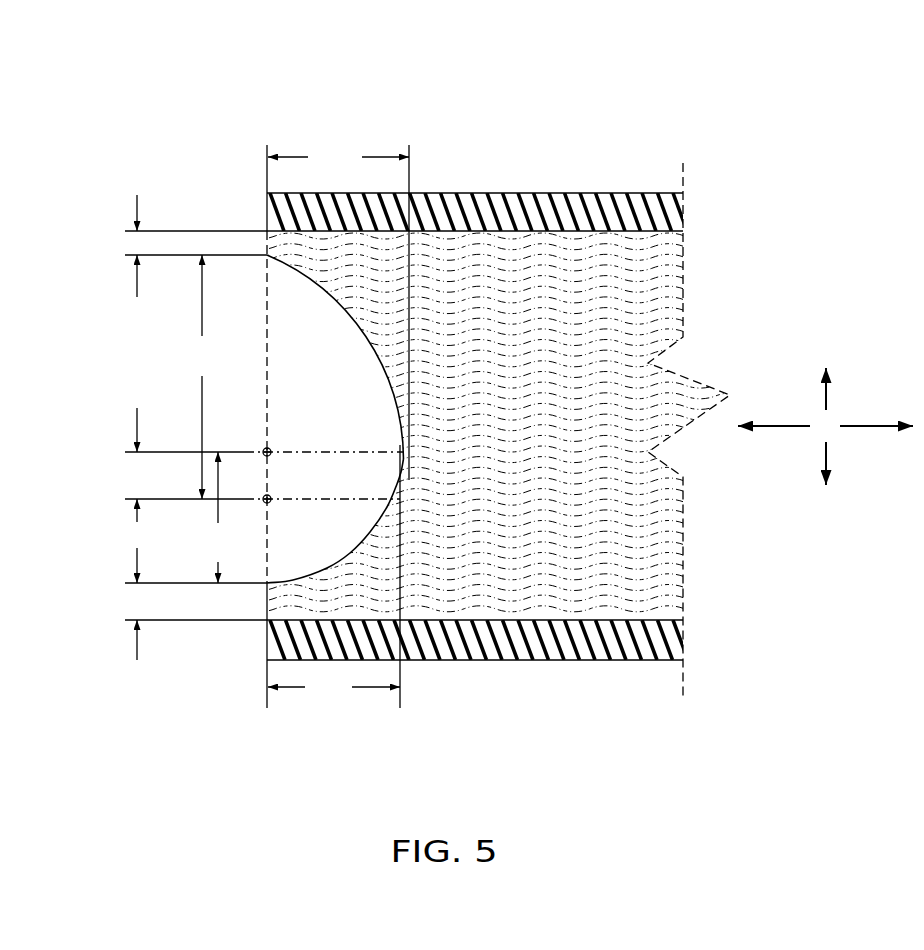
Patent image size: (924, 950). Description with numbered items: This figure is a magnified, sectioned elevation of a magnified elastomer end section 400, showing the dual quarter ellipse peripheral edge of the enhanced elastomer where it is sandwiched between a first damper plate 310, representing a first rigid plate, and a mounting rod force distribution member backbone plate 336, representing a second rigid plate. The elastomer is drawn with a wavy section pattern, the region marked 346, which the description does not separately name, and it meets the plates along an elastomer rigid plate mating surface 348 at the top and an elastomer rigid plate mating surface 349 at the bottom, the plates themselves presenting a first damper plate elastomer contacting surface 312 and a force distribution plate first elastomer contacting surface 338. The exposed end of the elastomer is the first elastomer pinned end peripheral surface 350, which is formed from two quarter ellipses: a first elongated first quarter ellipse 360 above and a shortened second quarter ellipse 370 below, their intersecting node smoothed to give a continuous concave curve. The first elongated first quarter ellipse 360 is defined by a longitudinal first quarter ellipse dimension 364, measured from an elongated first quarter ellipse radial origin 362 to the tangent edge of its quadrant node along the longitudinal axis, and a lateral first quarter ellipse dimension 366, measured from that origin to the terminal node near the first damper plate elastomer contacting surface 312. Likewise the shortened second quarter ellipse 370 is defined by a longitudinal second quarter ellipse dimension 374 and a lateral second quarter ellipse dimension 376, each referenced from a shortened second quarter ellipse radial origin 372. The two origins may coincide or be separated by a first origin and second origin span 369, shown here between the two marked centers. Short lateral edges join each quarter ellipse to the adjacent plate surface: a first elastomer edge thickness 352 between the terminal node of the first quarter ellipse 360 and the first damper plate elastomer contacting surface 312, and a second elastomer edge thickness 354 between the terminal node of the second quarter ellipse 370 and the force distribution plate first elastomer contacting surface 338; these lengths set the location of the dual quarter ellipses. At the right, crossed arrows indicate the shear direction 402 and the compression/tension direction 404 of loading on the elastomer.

The magnified elastomer end section 400 is at (830, 271).
The shear direction 402 is at (872, 425).
The compression/tension direction 404 is at (828, 455).
The first damper plate 310 is at (657, 215).
The first damper plate elastomer contacting surface 312 is at (627, 233).
The mounting rod force distribution member backbone plate 336 is at (655, 642).
The force distribution plate first elastomer contacting surface 338 is at (626, 620).
The fluid 346 is at (615, 318).
The elastomer rigid plate mating surface 348 is at (530, 232).
The elastomer rigid plate mating surface 349 is at (532, 627).
The first elastomer pinned end peripheral surface 350 is at (369, 414).
The first elongated first quarter ellipse 360 is at (373, 345).
The shortened second quarter ellipse 370 is at (366, 536).
The shortened second quarter ellipse radial origin 372 is at (272, 447).
The elongated first quarter ellipse radial origin 362 is at (272, 504).
The first elastomer edge thickness (L2) 352 is at (127, 243).
The second elastomer edge thickness (L3) 354 is at (128, 600).
The longitudinal first quarter ellipse dimension (A1) 364 is at (340, 143).
The longitudinal second quarter ellipse dimension (A3) 374 is at (331, 705).
The lateral first quarter ellipse dimension (B1) 366 is at (180, 352).
The lateral second quarter ellipse dimension (B2) 376 is at (200, 537).
The first origin and second origin span (L1) 369 is at (118, 470).